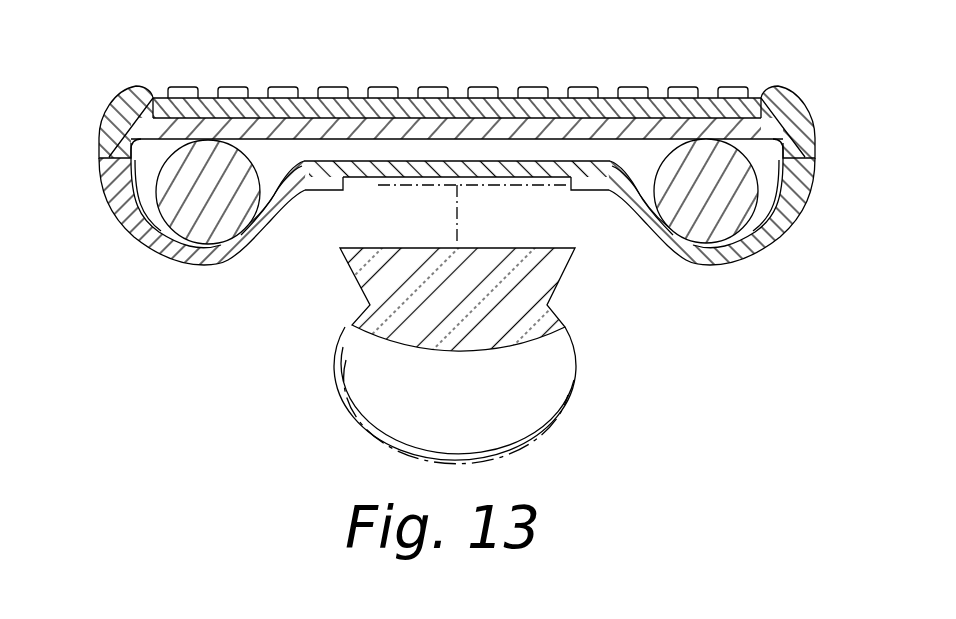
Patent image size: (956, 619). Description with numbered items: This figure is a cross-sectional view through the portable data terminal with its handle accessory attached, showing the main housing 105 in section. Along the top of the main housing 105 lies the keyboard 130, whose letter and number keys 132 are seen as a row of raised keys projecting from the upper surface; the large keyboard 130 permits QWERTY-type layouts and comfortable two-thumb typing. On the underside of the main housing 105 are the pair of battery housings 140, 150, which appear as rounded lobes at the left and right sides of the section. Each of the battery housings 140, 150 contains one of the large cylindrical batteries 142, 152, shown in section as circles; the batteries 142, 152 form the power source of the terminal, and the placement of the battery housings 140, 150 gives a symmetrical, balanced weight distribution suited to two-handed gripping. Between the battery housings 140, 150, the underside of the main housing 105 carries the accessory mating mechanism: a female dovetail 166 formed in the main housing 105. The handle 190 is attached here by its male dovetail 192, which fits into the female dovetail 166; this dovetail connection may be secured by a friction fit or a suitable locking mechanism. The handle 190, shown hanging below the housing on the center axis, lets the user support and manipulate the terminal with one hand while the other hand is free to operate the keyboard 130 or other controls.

The main housing 105 is at (125, 110).
The keyboard 130 is at (258, 88).
The letter and number keys 132 is at (384, 87).
The battery housing 140 is at (767, 232).
The battery 142 is at (700, 225).
The battery housing 150 is at (127, 213).
The battery 152 is at (200, 226).
The female dovetail 166 is at (350, 186).
The handle 190 is at (400, 404).
The male dovetail 192 is at (352, 278).